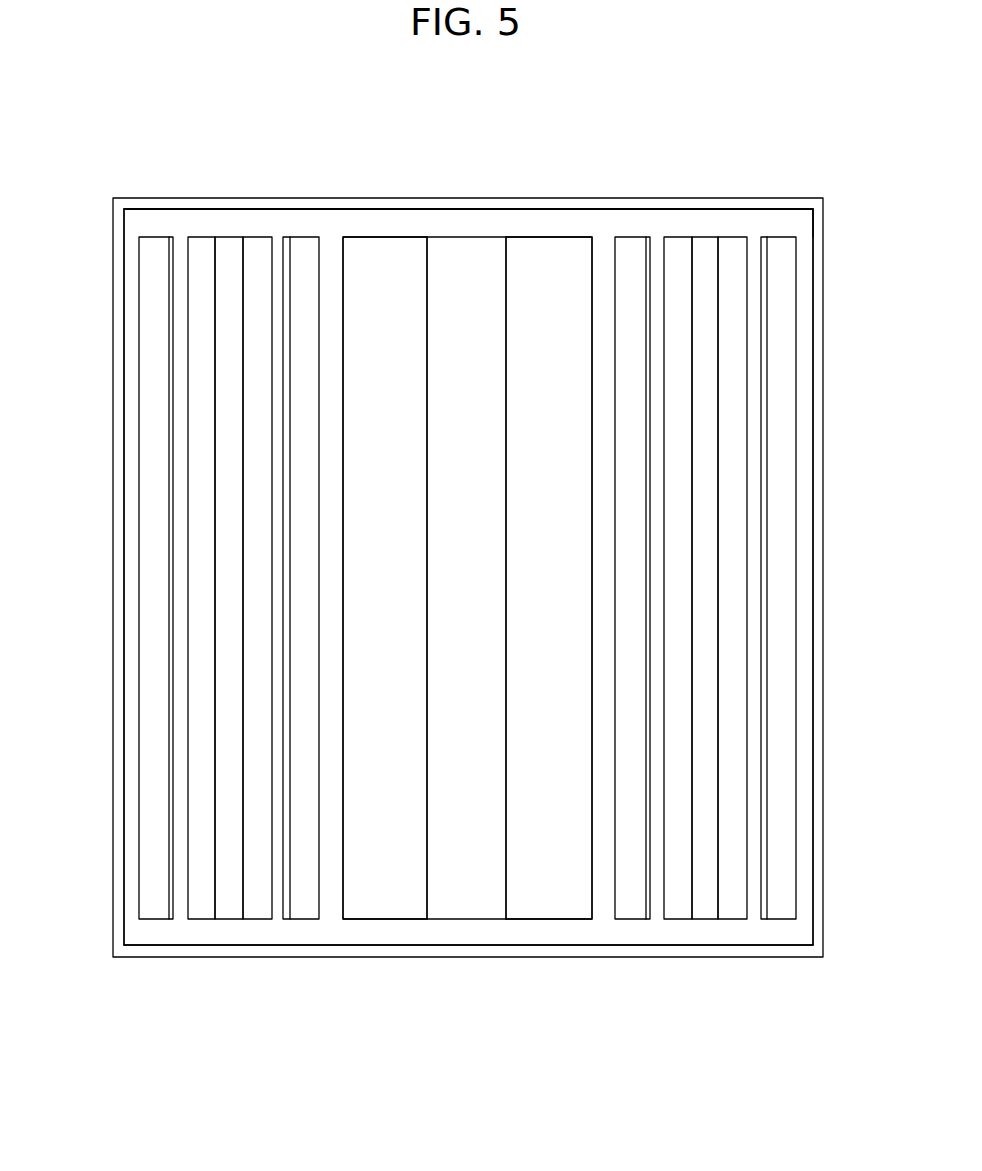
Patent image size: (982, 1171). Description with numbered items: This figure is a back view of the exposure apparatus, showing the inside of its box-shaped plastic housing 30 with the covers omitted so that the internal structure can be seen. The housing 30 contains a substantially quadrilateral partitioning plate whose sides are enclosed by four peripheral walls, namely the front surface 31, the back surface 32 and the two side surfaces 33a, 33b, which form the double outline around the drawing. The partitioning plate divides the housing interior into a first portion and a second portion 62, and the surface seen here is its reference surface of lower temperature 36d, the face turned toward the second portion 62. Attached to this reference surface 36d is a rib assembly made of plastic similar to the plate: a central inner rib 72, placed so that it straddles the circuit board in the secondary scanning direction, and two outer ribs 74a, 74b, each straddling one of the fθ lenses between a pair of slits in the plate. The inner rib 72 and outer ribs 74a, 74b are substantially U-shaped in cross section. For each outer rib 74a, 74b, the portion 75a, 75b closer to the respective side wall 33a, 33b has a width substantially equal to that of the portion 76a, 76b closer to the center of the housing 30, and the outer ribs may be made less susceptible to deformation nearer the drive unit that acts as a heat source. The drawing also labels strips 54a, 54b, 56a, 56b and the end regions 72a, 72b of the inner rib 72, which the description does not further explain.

The housing 30 is at (101, 879).
The front surface 31 is at (590, 207).
The back surface 32 is at (401, 949).
The side surface 33a is at (118, 438).
The side surface 33b is at (818, 438).
The reference surface of lower temperature 36d is at (165, 225).
The first outer electrode 54a is at (154, 908).
The second outer electrode 54b is at (780, 247).
The first inner electrode 56a is at (303, 245).
The second inner electrode 56b is at (632, 905).
The second portion 62 is at (838, 892).
The inner rib 72 is at (468, 251).
The center electrode first portion 72a is at (376, 247).
The center electrode second portion 72b is at (545, 905).
The outer rib 74a is at (232, 251).
The outer rib 74b is at (705, 251).
The portion closer to side wall 75a is at (203, 247).
The portion closer to side wall 75b is at (733, 905).
The portion closer to center of housing 76a is at (255, 908).
The portion closer to center of housing 76b is at (678, 247).